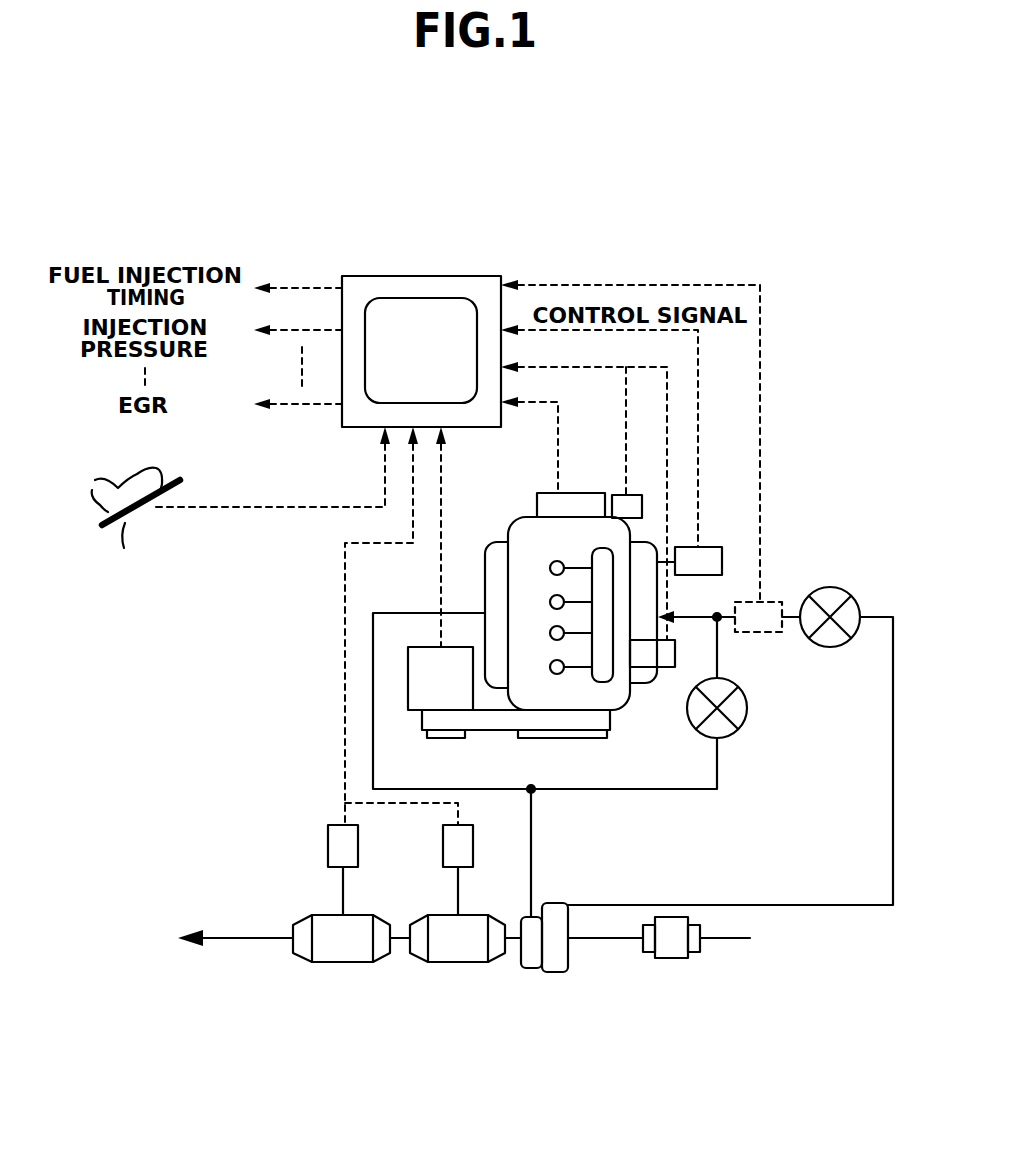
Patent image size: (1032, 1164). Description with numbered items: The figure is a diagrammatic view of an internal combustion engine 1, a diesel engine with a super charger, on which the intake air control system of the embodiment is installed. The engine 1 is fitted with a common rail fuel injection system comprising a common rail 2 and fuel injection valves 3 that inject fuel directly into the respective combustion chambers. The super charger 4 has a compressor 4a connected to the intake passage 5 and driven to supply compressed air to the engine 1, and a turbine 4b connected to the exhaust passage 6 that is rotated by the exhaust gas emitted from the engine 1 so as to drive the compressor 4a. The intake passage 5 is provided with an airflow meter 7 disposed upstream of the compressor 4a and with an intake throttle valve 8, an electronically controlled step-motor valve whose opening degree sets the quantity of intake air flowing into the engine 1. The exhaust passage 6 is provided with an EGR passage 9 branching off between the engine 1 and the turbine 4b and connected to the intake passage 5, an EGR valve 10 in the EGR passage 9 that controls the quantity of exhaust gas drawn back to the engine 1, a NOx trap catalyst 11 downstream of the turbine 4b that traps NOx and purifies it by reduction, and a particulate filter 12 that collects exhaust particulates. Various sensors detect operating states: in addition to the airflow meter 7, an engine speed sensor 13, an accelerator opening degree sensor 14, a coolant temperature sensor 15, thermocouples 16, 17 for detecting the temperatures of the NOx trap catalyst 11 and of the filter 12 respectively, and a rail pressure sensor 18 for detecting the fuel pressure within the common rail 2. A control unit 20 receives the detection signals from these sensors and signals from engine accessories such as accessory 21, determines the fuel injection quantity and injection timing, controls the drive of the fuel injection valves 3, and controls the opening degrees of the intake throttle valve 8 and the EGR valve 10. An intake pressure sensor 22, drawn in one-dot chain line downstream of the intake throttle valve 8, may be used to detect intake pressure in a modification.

The internal combustion engine 1 is at (507, 542).
The common rail 2 is at (603, 682).
The fuel injection valves 3 is at (551, 562).
The super charger 4 is at (527, 935).
The compressor 4a is at (558, 973).
The turbine 4b is at (522, 917).
The intake passage 5 is at (650, 903).
The exhaust passage 6 is at (232, 937).
The airflow meter 7 is at (640, 940).
The intake throttle valve 8 is at (860, 603).
The EGR passage 9 is at (607, 790).
The EGR valve 10 is at (748, 712).
The NOx trap catalyst 11 is at (443, 913).
The particulate filter 12 is at (328, 913).
The engine speed sensor 13 is at (618, 495).
The accelerator opening degree sensor 14 is at (136, 524).
The coolant temperature sensor 15 is at (707, 547).
The thermocouple 16 is at (443, 848).
The thermocouple 17 is at (328, 843).
The rail pressure sensor 18 is at (675, 653).
The control unit 20 is at (422, 276).
The accessory 21 is at (422, 647).
The intake pressure sensor 22 is at (773, 598).